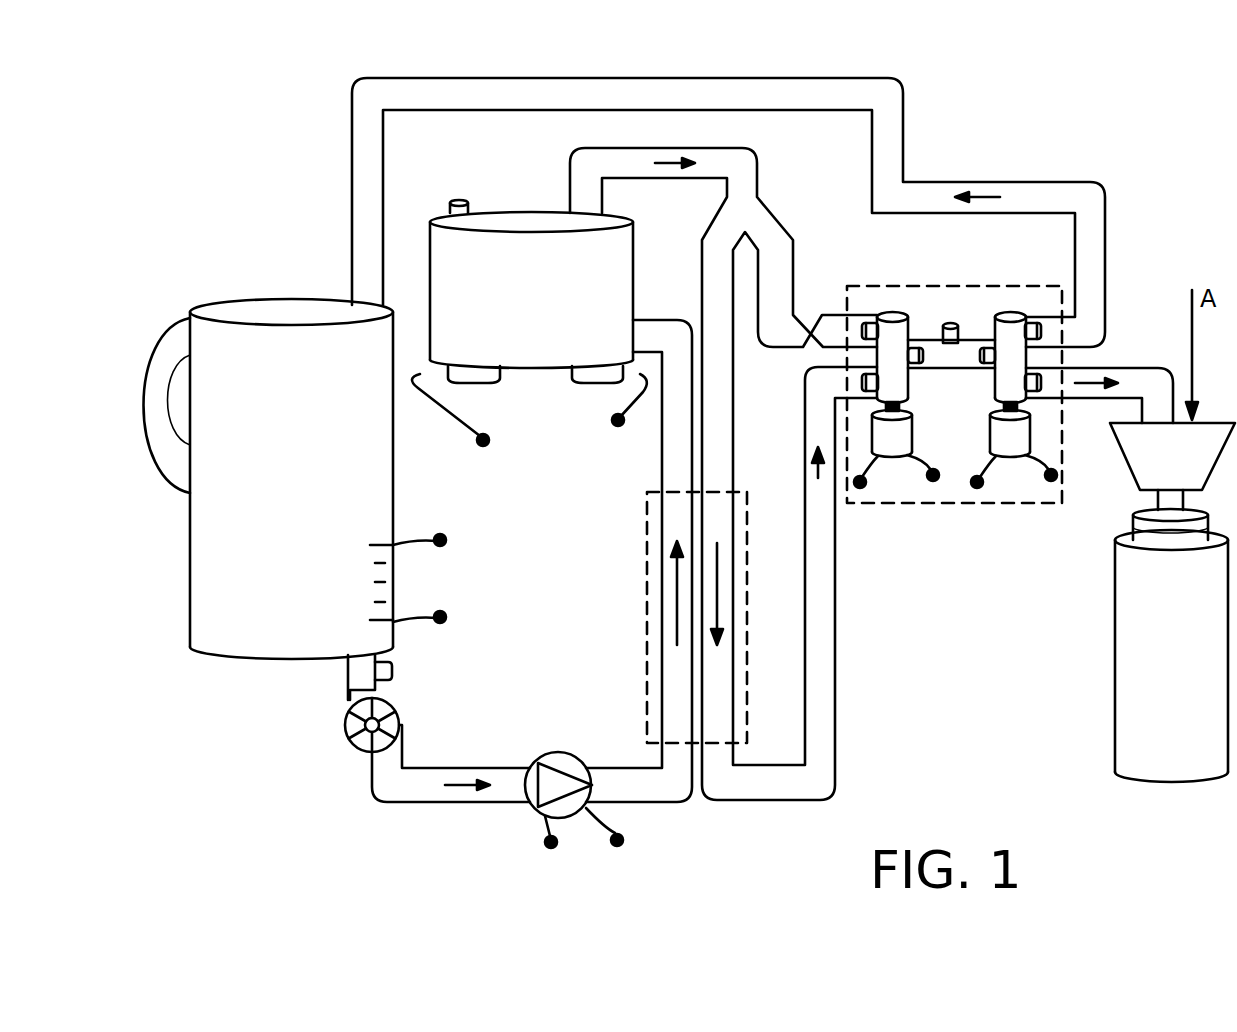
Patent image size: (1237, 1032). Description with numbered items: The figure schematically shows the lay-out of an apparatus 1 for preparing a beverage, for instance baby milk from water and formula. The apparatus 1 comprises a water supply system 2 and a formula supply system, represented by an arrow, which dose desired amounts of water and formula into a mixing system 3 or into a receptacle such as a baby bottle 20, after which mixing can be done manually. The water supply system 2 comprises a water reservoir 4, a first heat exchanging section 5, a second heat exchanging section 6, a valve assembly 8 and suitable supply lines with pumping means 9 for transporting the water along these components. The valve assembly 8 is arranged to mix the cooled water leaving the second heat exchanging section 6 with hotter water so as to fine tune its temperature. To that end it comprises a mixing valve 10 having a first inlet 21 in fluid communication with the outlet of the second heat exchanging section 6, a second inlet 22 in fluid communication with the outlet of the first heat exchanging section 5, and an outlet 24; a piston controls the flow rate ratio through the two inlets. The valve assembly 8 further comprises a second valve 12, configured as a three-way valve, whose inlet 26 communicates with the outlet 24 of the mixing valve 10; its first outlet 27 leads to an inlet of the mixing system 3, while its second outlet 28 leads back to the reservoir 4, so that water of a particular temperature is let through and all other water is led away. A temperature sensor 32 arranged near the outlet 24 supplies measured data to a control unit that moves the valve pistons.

The apparatus 1 is at (213, 108).
The water supply system 2 is at (280, 738).
The mixing system 3 is at (1172, 466).
The water reservoir 4 is at (295, 479).
The first heat exchanging section 5 is at (529, 323).
The second heat exchanging section 6 is at (647, 590).
The valve assembly 8 is at (953, 503).
The pumping means 9 is at (389, 716).
The mixing valve 10 is at (890, 312).
The second valve 12 is at (1010, 312).
The baby bottle 20 is at (1171, 645).
The first inlet 21 is at (862, 383).
The second inlet 22 is at (868, 322).
The outlet 24 is at (916, 368).
The inlet 26 is at (988, 368).
The first outlet 27 is at (1042, 393).
The second outlet 28 is at (1035, 322).
The temperature sensor 32 is at (948, 322).